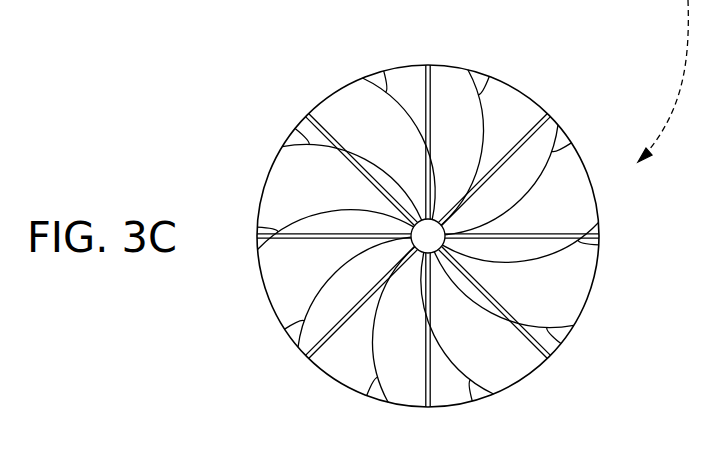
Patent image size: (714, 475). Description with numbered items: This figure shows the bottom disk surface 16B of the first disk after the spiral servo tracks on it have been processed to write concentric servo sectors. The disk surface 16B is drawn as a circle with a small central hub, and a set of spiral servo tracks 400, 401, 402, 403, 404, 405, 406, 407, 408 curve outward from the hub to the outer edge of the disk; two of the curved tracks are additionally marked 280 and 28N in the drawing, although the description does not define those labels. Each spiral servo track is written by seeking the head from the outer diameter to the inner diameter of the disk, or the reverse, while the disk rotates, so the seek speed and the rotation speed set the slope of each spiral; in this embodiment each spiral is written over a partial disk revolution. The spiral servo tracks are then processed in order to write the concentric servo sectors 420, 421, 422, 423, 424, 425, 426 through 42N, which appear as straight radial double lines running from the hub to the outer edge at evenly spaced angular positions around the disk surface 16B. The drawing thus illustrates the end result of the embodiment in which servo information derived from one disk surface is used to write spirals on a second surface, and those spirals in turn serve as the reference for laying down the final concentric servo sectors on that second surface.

The bottom disk surface 16B is at (536, 104).
The blade 280 is at (487, 93).
The blade 28N is at (378, 90).
The spiral servo track 400 is at (460, 47).
The spiral servo track 401 is at (565, 144).
The spiral servo track 402 is at (600, 231).
The spiral servo track 403 is at (555, 339).
The spiral servo track 404 is at (475, 398).
The spiral servo track 405 is at (375, 394).
The spiral servo track 406 is at (287, 333).
The spiral servo track 407 is at (258, 255).
The spiral servo track 408 is at (297, 136).
The concentric servo sector 420 is at (429, 64).
The concentric servo sector 421 is at (551, 117).
The concentric servo sector 422 is at (596, 242).
The concentric servo sector 423 is at (549, 360).
The concentric servo sector 424 is at (428, 408).
The concentric servo sector 425 is at (306, 359).
The concentric servo sector 426 is at (258, 236).
The concentric servo sector 42N is at (311, 113).